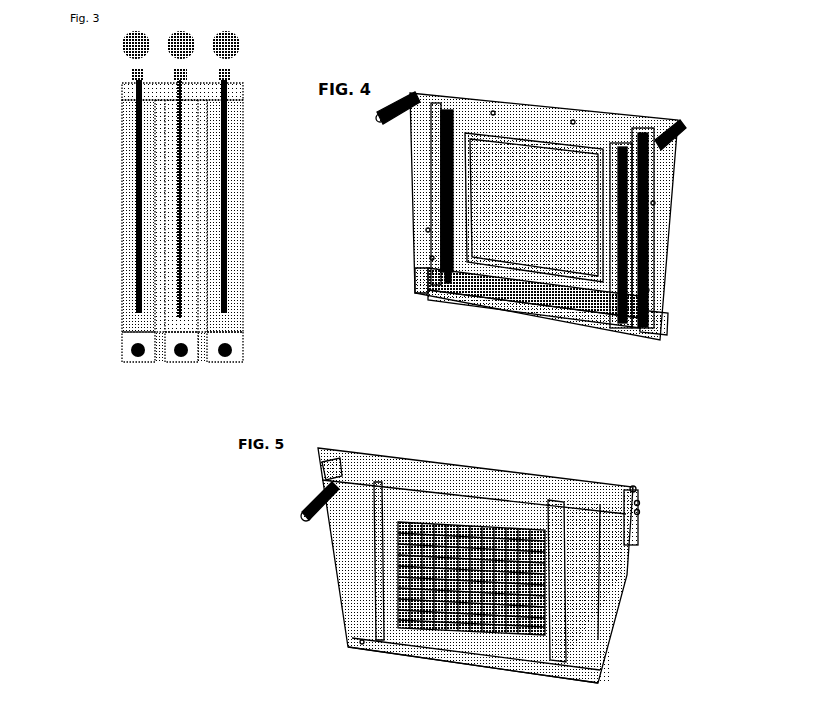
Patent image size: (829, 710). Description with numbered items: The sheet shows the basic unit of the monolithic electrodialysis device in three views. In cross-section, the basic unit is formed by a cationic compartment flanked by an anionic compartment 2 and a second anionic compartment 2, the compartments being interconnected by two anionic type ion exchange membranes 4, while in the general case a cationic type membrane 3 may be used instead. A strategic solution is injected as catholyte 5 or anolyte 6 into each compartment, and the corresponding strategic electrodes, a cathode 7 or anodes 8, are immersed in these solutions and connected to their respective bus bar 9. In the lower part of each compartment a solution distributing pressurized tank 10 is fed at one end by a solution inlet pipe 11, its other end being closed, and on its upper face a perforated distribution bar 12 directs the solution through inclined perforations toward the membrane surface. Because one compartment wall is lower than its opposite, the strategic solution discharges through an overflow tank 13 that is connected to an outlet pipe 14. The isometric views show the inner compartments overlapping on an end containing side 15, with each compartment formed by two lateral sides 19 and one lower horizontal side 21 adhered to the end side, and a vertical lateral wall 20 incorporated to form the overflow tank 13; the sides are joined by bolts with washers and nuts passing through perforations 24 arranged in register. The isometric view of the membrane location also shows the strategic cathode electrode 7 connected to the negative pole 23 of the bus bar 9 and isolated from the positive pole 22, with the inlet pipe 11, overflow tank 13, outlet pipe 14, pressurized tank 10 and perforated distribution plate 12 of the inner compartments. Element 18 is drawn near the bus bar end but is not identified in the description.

In FIG. 3, the anionic compartment 2 is at (122, 97).
In FIG. 5, the ion exchange membrane of the cationic type 3 is at (512, 474).
In FIG. 3, the ion exchange membrane of the anionic type 4 is at (198, 198).
In FIG. 3, the catholyte 5 is at (182, 117).
In FIG. 3, the anolyte 6 is at (172, 246).
In FIG. 3, the cathode 7 is at (177, 282).
In FIG. 5, the cathode 7 is at (452, 462).
In FIG. 3, the anode 8 is at (215, 160).
In FIG. 3, the bus bar 9 is at (131, 74).
In FIG. 5, the bus bar 9 is at (560, 481).
In FIG. 3, the solution distributing pressurized tank 10 is at (128, 355).
In FIG. 4, the solution distributing pressurized tank 10 is at (460, 300).
In FIG. 5, the solution distributing pressurized tank 10 is at (346, 634).
In FIG. 3, the solution inlet pipe 11 is at (128, 343).
In FIG. 4, the solution inlet pipe 11 is at (415, 257).
In FIG. 5, the solution inlet pipe 11 is at (340, 614).
In FIG. 3, the perforated distribution bar 12 is at (137, 330).
In FIG. 4, the perforated distribution bar 12 is at (500, 292).
In FIG. 5, the perforated distribution bar 12 is at (368, 648).
In FIG. 4, the overflow tank 13 is at (647, 227).
In FIG. 5, the overflow tank 13 is at (608, 484).
In FIG. 4, the outlet pipe 14 is at (668, 309).
In FIG. 5, the outlet pipe 14 is at (612, 645).
In FIG. 4, the end containing side 15 is at (613, 112).
In FIG. 5, the fastener 18 is at (641, 511).
In FIG. 4, the lateral side 19 is at (600, 110).
In FIG. 5, the lateral side 19 is at (637, 488).
In FIG. 4, the vertical lateral wall 20 is at (626, 190).
In FIG. 4, the lower horizontal side 21 is at (576, 322).
In FIG. 5, the positive pole 22 is at (640, 532).
In FIG. 5, the negative pole 23 is at (303, 492).
In FIG. 4, the perforations 24 is at (433, 230).